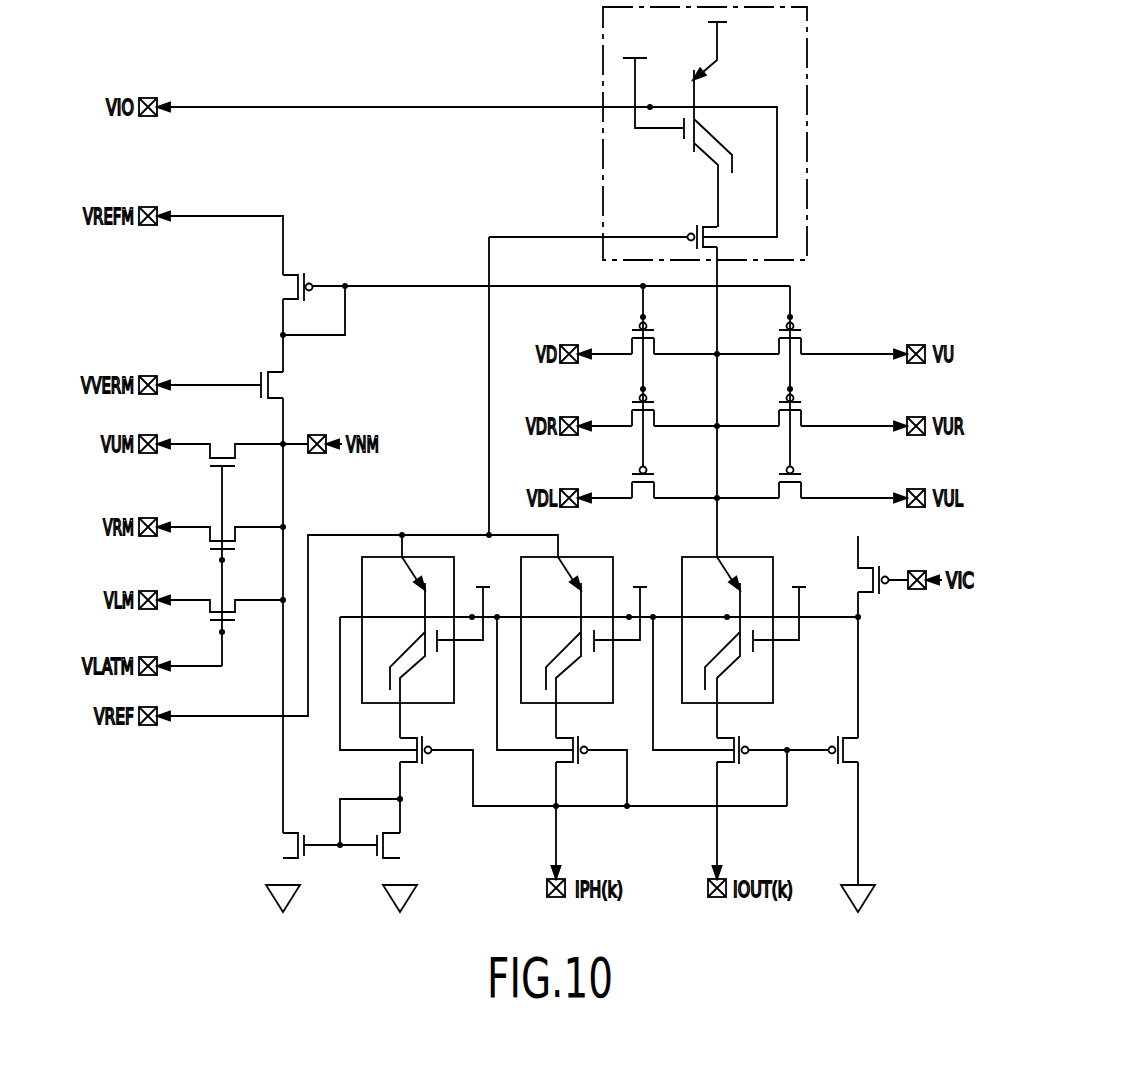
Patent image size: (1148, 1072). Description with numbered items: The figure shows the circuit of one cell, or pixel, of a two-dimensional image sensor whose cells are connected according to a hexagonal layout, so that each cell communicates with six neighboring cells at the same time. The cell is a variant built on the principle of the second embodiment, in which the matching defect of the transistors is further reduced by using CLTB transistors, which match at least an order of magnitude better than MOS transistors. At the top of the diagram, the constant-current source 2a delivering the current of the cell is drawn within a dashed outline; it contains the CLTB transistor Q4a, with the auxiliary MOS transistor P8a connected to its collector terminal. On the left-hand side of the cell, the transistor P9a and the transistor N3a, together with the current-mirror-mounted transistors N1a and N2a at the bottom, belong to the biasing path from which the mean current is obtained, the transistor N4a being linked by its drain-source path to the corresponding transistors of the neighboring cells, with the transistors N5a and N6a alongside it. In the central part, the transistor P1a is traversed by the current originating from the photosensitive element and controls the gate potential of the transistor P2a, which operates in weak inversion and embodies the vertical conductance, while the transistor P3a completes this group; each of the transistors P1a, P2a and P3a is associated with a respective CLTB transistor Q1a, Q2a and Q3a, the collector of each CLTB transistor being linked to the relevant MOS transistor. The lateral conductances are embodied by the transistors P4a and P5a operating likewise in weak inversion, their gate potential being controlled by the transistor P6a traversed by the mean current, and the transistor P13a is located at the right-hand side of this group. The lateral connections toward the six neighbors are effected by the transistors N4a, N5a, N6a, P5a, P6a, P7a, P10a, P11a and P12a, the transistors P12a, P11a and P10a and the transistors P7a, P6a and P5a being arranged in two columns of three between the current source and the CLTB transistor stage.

The constant-current source 2a is at (812, 74).
The CLTB transistor Q4a is at (688, 124).
The auxiliary MOS transistor P8a is at (698, 223).
The PMOS transistor P9a is at (303, 274).
The NMOS transistor N3a is at (265, 370).
The transistor N4a is at (243, 460).
The transistor N5a is at (243, 544).
The transistor N6a is at (243, 631).
The CLTB transistor Q2a is at (358, 575).
The CLTB transistor Q1a is at (514, 575).
The CLTB transistor Q3a is at (676, 575).
The transistor P12a is at (670, 336).
The transistor P11a is at (670, 408).
The transistor P10a is at (670, 480).
The transistor P7a is at (812, 336).
The transistor P6a is at (812, 408).
The transistor P5a is at (812, 480).
The PMOS transistor P13a is at (886, 565).
The transistor P2a is at (422, 737).
The transistor P1a is at (576, 737).
The transistor P3a is at (736, 737).
The transistor P4a is at (837, 737).
The current-mirror-mounted transistor N1a is at (301, 833).
The current-mirror-mounted transistor N2a is at (381, 833).